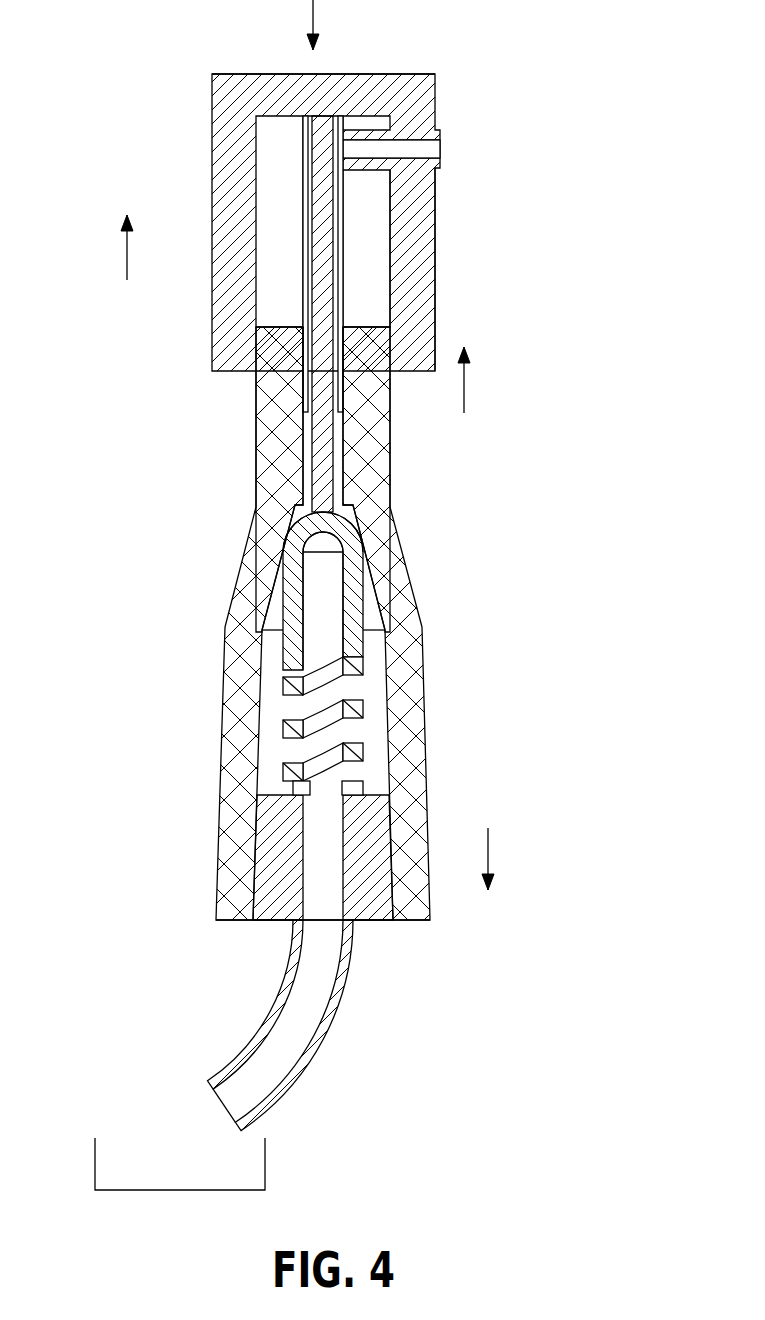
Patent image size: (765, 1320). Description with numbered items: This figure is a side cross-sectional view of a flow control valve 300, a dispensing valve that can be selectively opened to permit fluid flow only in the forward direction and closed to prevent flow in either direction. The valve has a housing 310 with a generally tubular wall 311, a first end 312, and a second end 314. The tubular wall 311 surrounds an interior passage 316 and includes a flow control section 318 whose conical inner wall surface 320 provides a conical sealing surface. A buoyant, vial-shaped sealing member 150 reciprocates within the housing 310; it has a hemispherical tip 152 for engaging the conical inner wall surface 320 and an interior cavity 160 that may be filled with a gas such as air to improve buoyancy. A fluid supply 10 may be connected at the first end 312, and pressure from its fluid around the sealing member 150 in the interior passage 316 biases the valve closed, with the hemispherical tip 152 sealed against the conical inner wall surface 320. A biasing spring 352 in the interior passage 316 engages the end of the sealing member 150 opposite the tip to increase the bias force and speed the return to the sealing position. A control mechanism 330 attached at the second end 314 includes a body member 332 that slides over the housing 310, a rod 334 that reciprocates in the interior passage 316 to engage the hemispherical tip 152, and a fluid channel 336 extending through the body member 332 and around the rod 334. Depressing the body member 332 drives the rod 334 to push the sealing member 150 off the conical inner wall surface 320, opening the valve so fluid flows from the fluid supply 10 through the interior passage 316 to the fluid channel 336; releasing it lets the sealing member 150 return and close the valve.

The flow control valve 300 is at (592, 30).
The second end 314 is at (167, 75).
The rod 334 is at (303, 213).
The fluid channel 336 is at (422, 150).
The control mechanism 330 is at (470, 222).
The body member 332 is at (435, 282).
The hemispherical tip 152 is at (343, 523).
The flow control section 318 is at (410, 565).
The conical inner wall surface 320 is at (282, 542).
The sealing member 150 is at (283, 618).
The interior cavity 160 is at (323, 635).
The interior passage 316 is at (360, 688).
The biasing spring 352 is at (362, 713).
The housing 310 is at (198, 805).
The tubular wall 311 is at (230, 857).
The first end 312 is at (445, 923).
The fluid supply 10 is at (215, 1105).